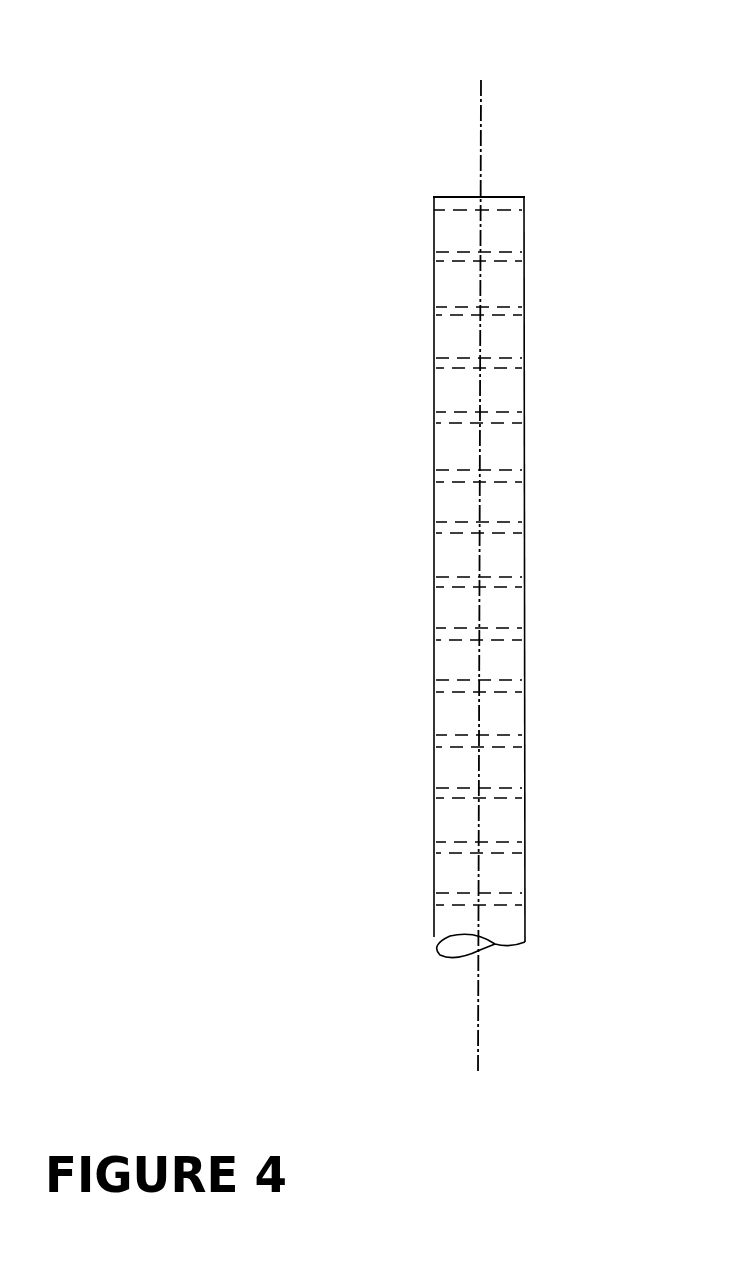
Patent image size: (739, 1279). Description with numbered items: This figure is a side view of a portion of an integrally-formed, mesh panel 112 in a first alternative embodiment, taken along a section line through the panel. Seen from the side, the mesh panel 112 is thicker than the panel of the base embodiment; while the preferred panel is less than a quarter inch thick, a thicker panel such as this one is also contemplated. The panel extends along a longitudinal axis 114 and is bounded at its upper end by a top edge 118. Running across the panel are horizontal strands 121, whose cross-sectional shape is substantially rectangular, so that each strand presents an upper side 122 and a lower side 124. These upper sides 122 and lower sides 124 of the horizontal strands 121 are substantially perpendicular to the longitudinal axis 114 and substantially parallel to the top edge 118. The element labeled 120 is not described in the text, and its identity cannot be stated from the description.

The integrally-formed, mesh panel 112 is at (465, 540).
The longitudinal axis 114 is at (483, 125).
The top edge 118 is at (465, 195).
The sleeve body with rings 120 is at (383, 577).
The horizontal strands 121 is at (455, 470).
The upper sides 122 is at (463, 790).
The lower sides 124 is at (463, 800).